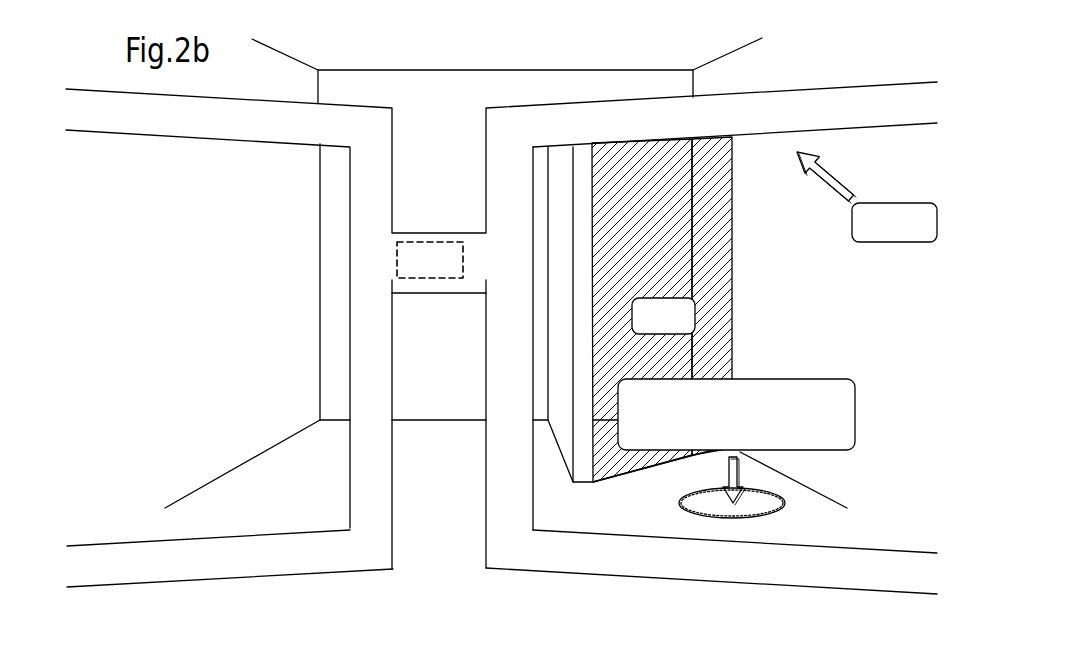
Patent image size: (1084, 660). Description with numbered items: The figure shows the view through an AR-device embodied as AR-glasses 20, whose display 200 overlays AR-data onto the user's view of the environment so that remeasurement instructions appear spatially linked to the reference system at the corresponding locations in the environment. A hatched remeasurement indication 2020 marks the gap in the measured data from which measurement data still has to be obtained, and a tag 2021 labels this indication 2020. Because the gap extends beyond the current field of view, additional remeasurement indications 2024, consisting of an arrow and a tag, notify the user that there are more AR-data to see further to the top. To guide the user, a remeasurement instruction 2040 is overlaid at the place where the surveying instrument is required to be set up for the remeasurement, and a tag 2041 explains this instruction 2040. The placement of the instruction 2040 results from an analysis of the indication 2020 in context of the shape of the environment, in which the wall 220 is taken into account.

The display 200 is at (128, 181).
The wall 220 is at (538, 168).
The AR-glasses 20 is at (447, 277).
The remeasurement indication 2020 is at (708, 215).
The tag 2021 is at (695, 328).
The additional remeasurement indications 2024 is at (838, 210).
The tag 2041 is at (853, 410).
The remeasurement instruction 2040 is at (747, 477).